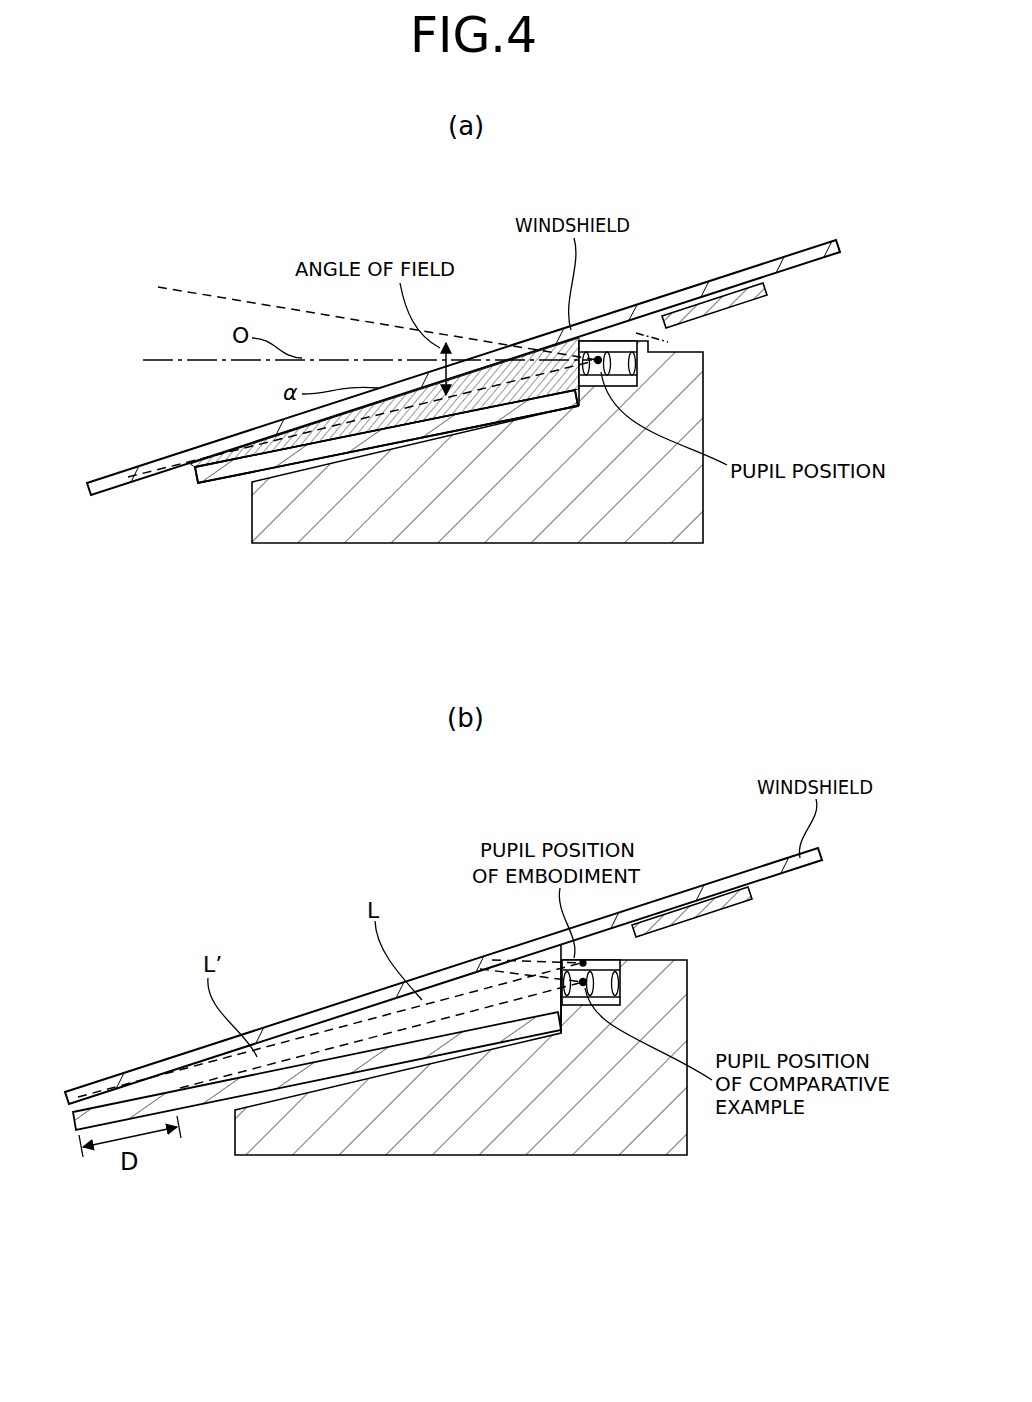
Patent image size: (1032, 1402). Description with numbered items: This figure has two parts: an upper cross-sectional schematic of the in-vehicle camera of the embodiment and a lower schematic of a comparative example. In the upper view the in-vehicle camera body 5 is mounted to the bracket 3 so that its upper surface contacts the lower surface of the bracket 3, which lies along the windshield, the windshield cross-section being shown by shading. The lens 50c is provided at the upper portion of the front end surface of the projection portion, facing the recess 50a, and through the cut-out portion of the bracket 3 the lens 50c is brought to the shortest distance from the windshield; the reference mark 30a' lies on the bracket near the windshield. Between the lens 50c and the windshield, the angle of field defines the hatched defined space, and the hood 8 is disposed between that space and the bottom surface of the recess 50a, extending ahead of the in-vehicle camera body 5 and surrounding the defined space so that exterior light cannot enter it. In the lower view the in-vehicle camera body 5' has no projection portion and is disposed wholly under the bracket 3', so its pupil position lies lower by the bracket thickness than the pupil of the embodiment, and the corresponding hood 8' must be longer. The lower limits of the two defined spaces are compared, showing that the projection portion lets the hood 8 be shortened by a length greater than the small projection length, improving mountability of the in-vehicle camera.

The bracket 3 is at (734, 331).
The in-vehicle camera body 5 is at (477, 489).
The hood 8 is at (386, 514).
The optical axis reference point on windshield 30a' is at (669, 292).
The recess 50a is at (252, 482).
The lens 50c is at (560, 360).
The bracket 3' is at (703, 936).
The in-vehicle camera body 5' is at (461, 1101).
The hood (comparative example) 8' is at (317, 1101).